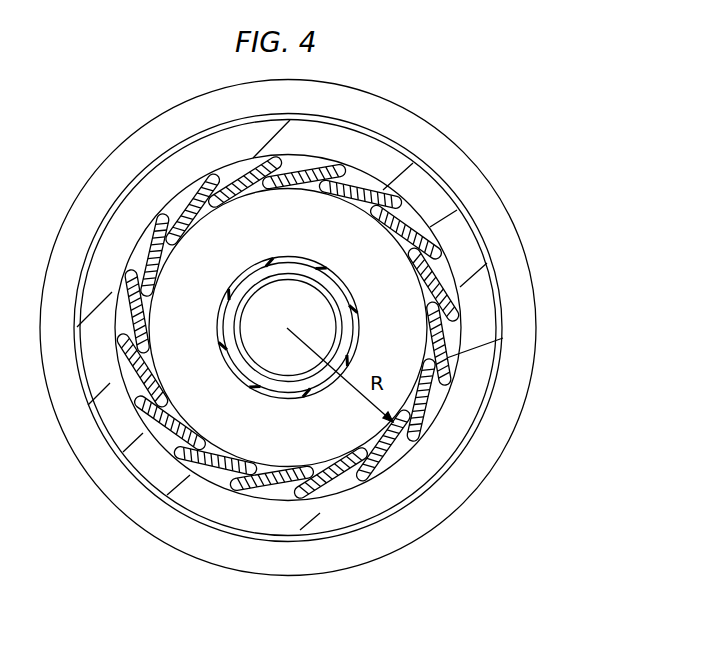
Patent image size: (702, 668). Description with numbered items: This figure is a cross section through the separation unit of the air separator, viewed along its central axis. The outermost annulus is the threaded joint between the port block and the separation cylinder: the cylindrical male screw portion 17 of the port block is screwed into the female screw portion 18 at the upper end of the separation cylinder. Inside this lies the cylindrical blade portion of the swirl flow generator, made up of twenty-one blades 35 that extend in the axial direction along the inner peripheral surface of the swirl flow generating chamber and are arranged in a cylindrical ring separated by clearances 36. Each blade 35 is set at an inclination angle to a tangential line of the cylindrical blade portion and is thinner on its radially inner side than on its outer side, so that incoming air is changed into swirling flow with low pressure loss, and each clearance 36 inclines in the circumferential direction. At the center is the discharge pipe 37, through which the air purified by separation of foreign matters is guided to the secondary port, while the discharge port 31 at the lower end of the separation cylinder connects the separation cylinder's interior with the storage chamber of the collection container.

The male screw portion 17 is at (463, 413).
The female screw portion 18 is at (515, 374).
The discharge port 31 is at (258, 358).
The blades 35 is at (463, 338).
The clearances 36 is at (467, 332).
The discharge pipe 37 is at (333, 277).